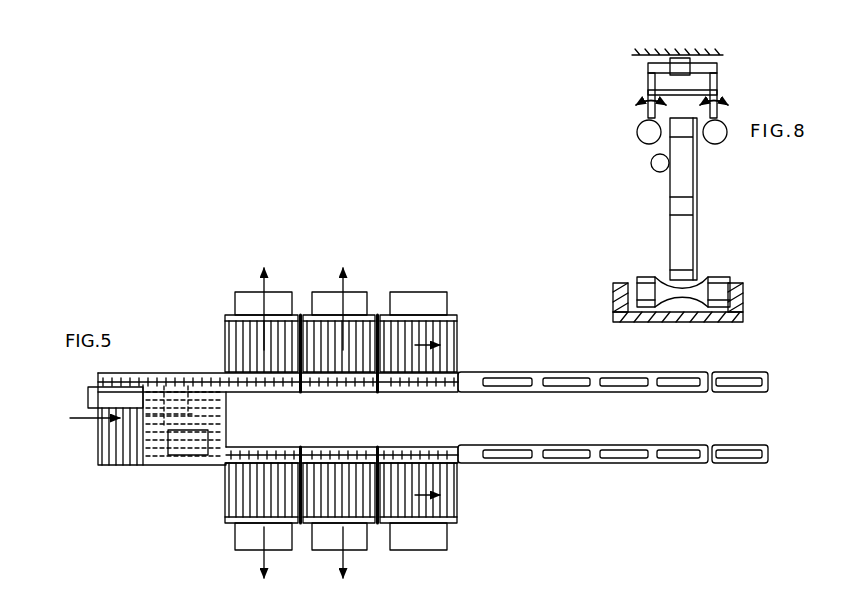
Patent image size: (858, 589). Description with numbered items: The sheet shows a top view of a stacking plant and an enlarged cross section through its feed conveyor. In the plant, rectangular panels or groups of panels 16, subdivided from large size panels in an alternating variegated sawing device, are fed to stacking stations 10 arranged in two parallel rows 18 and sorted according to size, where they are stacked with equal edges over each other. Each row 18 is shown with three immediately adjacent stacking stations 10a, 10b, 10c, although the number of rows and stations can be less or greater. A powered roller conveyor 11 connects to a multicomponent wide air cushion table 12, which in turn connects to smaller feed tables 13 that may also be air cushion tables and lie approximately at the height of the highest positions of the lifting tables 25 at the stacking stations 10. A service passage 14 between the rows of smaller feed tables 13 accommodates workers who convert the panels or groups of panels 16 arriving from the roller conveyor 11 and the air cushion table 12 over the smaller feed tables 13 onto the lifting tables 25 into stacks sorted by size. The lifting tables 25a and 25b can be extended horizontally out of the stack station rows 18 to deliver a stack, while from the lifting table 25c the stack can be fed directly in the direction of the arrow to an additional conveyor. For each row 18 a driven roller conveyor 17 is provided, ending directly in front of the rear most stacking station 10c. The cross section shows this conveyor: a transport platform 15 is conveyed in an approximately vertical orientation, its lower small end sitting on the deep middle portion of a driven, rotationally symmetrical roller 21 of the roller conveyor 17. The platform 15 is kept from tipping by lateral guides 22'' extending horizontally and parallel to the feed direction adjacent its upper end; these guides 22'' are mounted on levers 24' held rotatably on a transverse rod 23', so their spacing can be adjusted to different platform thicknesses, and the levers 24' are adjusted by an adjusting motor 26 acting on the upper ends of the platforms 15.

In FIG. 5, the stacking station 10 is at (289, 290).
In FIG. 5, the first stacking station 10a is at (242, 300).
In FIG. 5, the second stacking station 10b is at (315, 312).
In FIG. 5, the rear most stacking station 10c is at (412, 310).
In FIG. 5, the powered roller conveyor 11 is at (113, 448).
In FIG. 5, the air cushion table 12 is at (172, 462).
In FIG. 5, the smaller feed table 13 is at (263, 452).
In FIG. 5, the service passage 14 is at (366, 432).
In FIG. 5, the transport platform 15 is at (617, 373).
In FIG. 8, the transport platform 15 is at (693, 176).
In FIG. 5, the panels or groups of panels 16 is at (98, 396).
In FIG. 5, the driven roller conveyor 17 is at (512, 372).
In FIG. 8, the driven roller conveyor 17 is at (747, 294).
In FIG. 5, the row of stacking stations 18 is at (222, 330).
In FIG. 8, the roller 21 is at (637, 280).
In FIG. 8, the lateral guide 22'' is at (713, 126).
In FIG. 8, the transverse rod 23' is at (727, 77).
In FIG. 8, the lever 24' is at (675, 95).
In FIG. 5, the lifting table 25 is at (255, 340).
In FIG. 5, the first lifting table 25a is at (240, 337).
In FIG. 5, the second lifting table 25b is at (320, 345).
In FIG. 5, the third lifting table 25c is at (397, 332).
In FIG. 8, the adjusting motor 26 is at (668, 70).